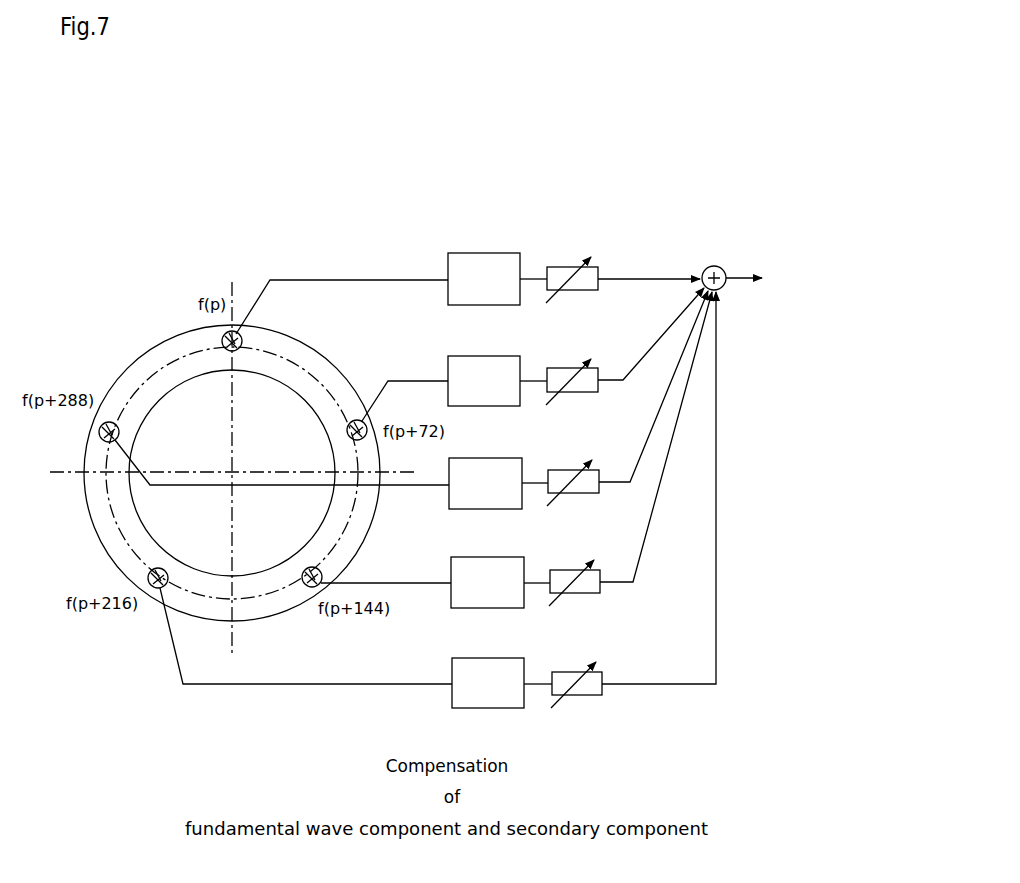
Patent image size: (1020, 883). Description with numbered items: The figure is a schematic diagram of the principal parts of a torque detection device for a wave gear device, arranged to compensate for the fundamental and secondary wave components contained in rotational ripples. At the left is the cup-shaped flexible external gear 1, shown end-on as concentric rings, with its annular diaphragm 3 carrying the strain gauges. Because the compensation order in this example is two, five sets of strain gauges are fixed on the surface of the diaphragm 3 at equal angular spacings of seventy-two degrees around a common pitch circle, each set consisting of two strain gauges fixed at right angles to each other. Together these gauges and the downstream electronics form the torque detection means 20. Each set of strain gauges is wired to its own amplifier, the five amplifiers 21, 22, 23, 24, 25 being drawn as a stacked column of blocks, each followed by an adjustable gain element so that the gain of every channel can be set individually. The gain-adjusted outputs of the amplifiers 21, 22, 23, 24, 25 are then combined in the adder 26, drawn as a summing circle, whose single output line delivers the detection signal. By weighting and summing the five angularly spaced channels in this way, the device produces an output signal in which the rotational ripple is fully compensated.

The cup-shaped flexible external gear 1 is at (138, 343).
The annular diaphragm 3 is at (116, 535).
The torque detection means 20 is at (428, 250).
The amplifier 21 is at (448, 292).
The amplifier 22 is at (448, 373).
The amplifier 23 is at (449, 497).
The amplifier 24 is at (451, 570).
The amplifier 25 is at (462, 658).
The adder 26 is at (713, 266).